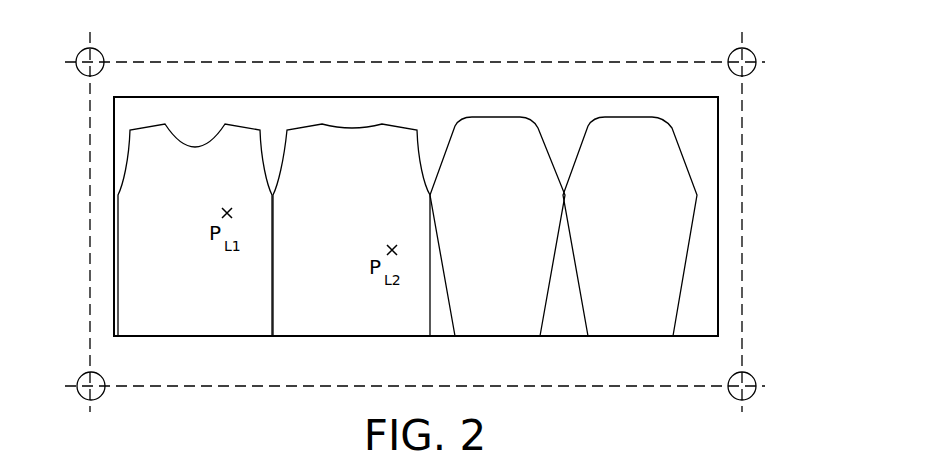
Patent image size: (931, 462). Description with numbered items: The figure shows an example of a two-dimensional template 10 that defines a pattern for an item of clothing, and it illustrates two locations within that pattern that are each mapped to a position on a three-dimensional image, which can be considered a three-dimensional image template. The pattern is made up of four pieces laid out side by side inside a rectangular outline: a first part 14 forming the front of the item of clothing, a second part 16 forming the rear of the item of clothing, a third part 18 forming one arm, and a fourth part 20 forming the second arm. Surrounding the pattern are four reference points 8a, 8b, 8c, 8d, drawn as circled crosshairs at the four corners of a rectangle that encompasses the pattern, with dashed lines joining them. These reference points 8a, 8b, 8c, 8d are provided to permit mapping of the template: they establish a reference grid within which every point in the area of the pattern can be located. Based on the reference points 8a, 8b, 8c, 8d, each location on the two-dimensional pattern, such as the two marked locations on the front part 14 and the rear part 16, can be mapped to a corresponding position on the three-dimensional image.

The reference point 8a is at (83, 55).
The reference point 8b is at (749, 54).
The reference point 8c is at (749, 378).
The reference point 8d is at (84, 378).
The example of a two-dimensional template 10 is at (777, 125).
The first part 14 is at (198, 336).
The second part 16 is at (352, 336).
The third part 18 is at (500, 336).
The fourth part 20 is at (630, 336).